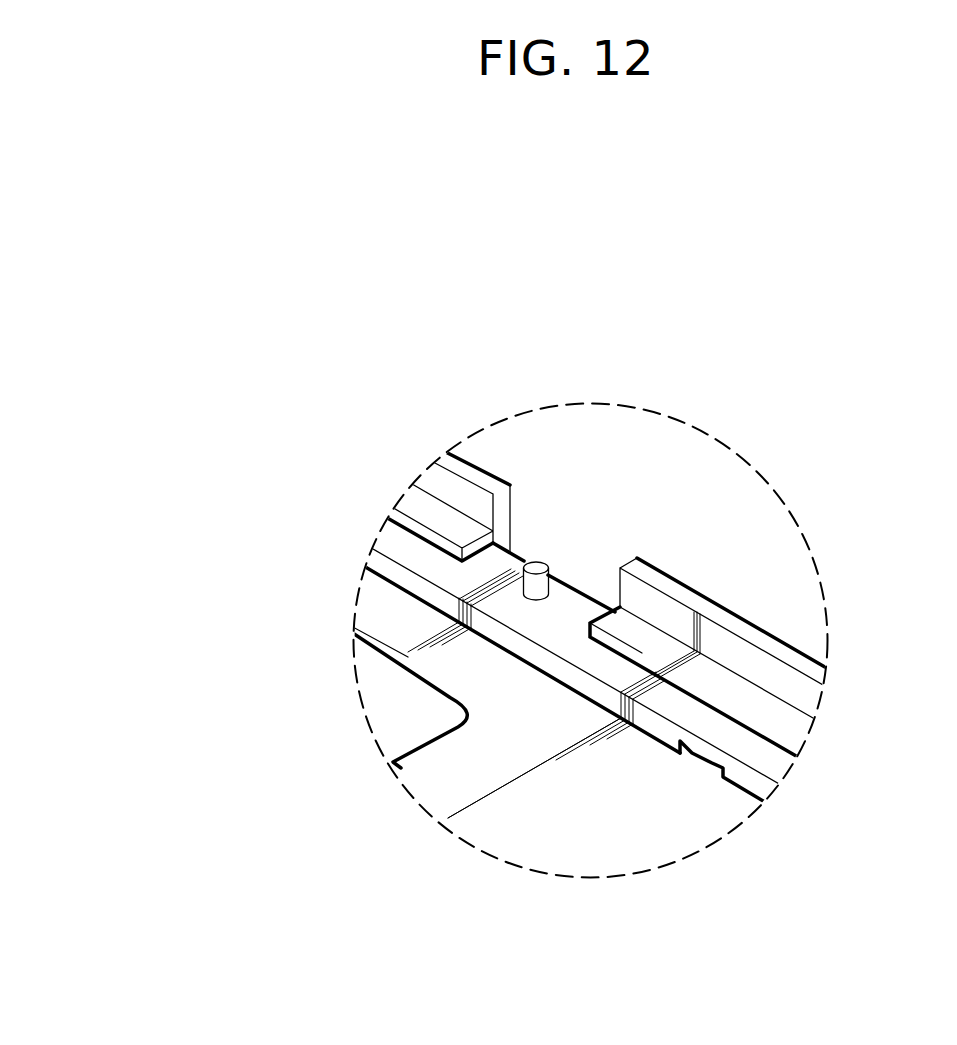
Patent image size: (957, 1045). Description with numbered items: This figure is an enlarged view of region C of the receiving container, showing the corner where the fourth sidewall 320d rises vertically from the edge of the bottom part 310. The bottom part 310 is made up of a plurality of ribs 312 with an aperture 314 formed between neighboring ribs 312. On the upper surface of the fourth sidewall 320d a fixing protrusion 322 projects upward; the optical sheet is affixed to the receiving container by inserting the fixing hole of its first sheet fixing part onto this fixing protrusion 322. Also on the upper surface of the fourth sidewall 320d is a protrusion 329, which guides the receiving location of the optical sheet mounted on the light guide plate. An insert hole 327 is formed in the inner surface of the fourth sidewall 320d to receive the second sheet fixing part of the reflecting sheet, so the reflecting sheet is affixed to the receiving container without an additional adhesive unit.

The region C is at (743, 453).
The bottom part 310 is at (392, 718).
The ribs 312 is at (440, 792).
The aperture 314 is at (388, 710).
The fourth sidewall 320d is at (736, 690).
The fixing protrusion 322 is at (536, 574).
The insert hole 327 is at (712, 763).
The protrusion 329 is at (401, 553).